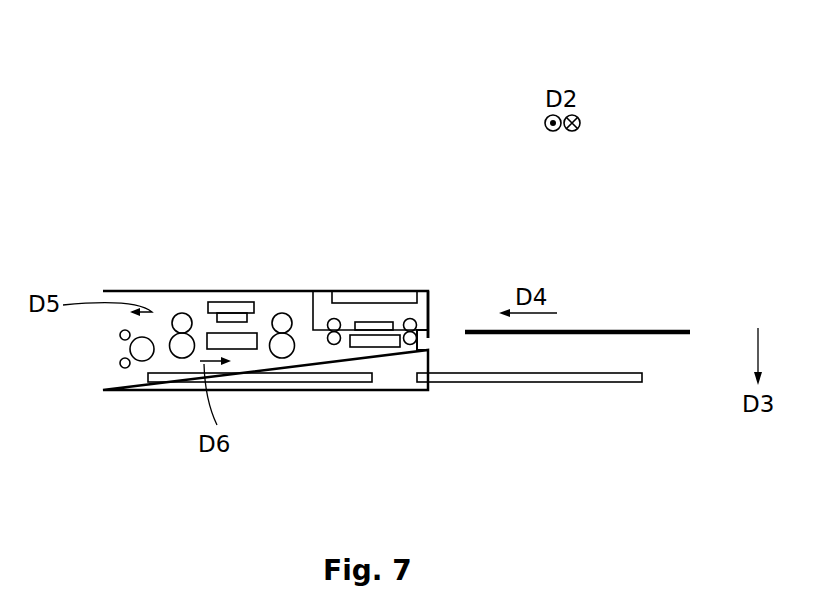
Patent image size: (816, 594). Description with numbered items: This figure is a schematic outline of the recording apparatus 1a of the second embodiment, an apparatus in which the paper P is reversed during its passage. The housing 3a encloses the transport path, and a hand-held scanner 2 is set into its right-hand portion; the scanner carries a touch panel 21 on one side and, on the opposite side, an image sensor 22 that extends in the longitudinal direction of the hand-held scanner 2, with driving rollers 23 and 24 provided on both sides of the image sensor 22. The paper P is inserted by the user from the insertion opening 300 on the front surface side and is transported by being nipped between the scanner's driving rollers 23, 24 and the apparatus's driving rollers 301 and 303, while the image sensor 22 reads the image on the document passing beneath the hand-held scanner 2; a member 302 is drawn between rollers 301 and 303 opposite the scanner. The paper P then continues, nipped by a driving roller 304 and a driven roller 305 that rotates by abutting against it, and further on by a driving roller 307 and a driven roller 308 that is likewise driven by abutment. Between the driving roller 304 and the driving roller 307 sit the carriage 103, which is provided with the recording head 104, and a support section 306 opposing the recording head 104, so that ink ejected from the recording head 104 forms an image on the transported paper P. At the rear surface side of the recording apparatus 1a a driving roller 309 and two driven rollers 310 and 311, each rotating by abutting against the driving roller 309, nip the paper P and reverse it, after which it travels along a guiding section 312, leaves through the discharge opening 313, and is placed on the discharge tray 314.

The recording apparatus 1a is at (448, 82).
The hand-held scanner 2 is at (313, 288).
The housing 3a is at (117, 287).
The touch panel 21 is at (388, 297).
The image sensor 22 is at (363, 327).
The driving roller 23 is at (411, 325).
The driving roller 24 is at (333, 325).
The carriage 103 is at (217, 305).
The recording head 104 is at (240, 316).
The insertion opening 300 is at (428, 337).
The driving roller 301 is at (409, 342).
The guide member 302 is at (379, 342).
The driving roller 303 is at (333, 342).
The driving roller 304 is at (283, 350).
The driven roller 305 is at (281, 323).
The support section 306 is at (242, 345).
The driving roller 307 is at (178, 348).
The driven roller 308 is at (179, 322).
The driving roller 309 is at (129, 348).
The driven roller 310 is at (120, 334).
The driven roller 311 is at (122, 366).
The guiding section 312 is at (148, 378).
The discharge opening 313 is at (420, 352).
The discharge tray 314 is at (472, 380).
The paper P is at (620, 330).